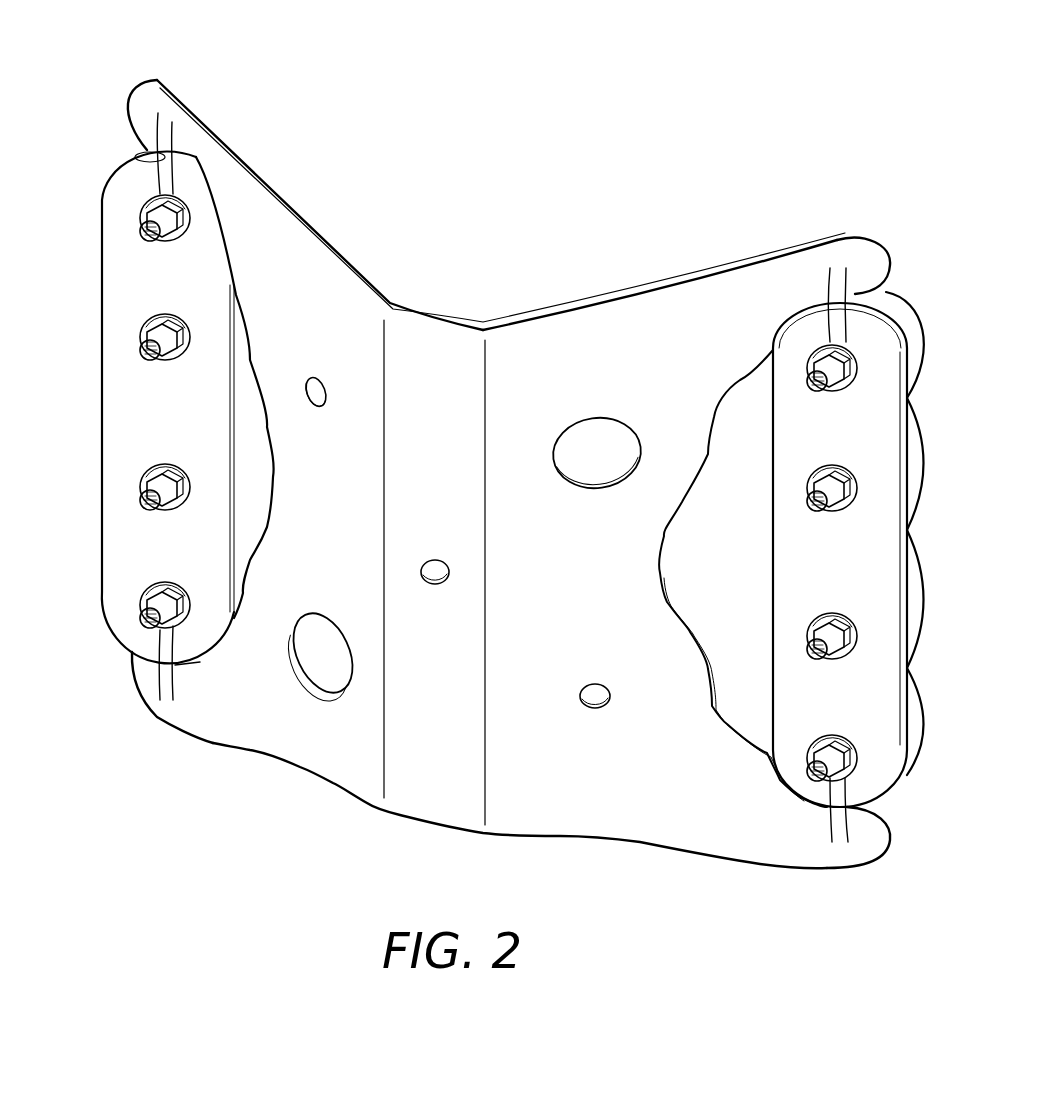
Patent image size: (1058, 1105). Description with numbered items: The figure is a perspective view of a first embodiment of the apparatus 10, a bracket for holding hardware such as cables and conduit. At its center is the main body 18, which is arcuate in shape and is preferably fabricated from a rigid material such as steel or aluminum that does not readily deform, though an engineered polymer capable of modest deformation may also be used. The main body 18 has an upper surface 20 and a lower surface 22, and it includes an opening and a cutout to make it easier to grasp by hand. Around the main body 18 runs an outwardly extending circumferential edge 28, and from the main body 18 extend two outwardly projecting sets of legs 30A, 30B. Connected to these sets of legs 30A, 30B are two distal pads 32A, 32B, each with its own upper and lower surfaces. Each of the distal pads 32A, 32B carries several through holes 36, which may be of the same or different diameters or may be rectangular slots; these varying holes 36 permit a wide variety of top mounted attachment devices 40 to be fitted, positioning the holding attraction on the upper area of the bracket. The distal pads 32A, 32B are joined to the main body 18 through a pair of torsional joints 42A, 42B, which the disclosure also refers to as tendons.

The apparatus 10 is at (653, 92).
The main body 18 is at (543, 347).
The upper surface 20 is at (252, 223).
The lower surface 22 is at (330, 250).
The circumferential edge 28 is at (328, 782).
The first set of legs 30A is at (163, 715).
The second set of legs 30B is at (158, 84).
The first distal pad 32A is at (130, 413).
The second distal pad 32B is at (803, 560).
The through holes 36 is at (142, 318).
The attachment devices 40 is at (843, 373).
The first torsional joint 42A is at (157, 667).
The second torsional joint 42B is at (150, 157).